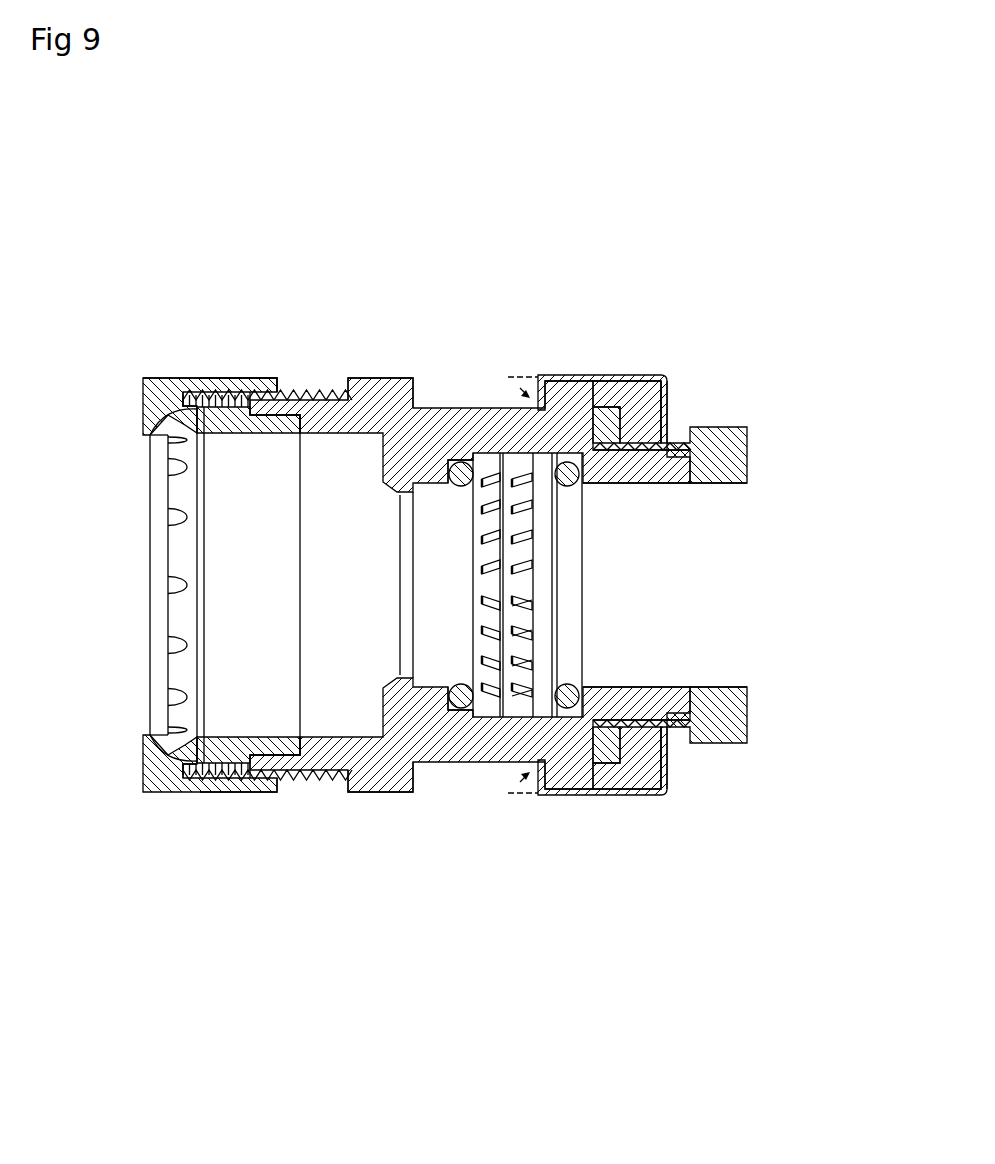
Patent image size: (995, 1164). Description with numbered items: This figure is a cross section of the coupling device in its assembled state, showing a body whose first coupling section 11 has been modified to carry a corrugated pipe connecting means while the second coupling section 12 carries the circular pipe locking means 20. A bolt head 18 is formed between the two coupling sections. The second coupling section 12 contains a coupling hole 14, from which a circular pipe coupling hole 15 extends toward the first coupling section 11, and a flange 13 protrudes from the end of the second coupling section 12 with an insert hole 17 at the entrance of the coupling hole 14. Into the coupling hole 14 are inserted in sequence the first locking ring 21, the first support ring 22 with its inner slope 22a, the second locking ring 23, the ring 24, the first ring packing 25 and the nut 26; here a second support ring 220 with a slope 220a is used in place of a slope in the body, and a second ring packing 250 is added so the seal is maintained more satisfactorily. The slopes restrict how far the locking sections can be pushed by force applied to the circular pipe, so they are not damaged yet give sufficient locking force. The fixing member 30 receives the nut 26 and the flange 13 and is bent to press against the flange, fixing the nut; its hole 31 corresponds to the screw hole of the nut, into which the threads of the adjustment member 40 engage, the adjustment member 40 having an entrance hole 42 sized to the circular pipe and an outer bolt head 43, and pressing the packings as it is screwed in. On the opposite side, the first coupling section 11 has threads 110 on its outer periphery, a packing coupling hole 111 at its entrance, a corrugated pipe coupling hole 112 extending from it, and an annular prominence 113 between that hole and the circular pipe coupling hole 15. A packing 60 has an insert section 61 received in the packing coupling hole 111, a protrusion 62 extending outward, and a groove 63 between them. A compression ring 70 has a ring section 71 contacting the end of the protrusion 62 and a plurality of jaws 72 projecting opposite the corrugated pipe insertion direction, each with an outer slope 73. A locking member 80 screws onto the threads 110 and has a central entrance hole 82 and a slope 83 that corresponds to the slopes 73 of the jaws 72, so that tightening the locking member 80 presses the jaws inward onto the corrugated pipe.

The first coupling section 11 is at (283, 693).
The threads 110 is at (308, 793).
The packing coupling hole 111 is at (225, 793).
The corrugated pipe coupling hole 112 is at (268, 793).
The annular prominence 113 is at (318, 715).
The second coupling section 12 is at (546, 571).
The flange 13 is at (630, 539).
The coupling hole 14 is at (600, 680).
The circular pipe coupling hole 15 is at (427, 500).
The insert hole 17 is at (667, 395).
The bolt head 18 is at (372, 378).
The circular pipe locking means 20 is at (575, 722).
The first locking ring 21 is at (492, 715).
The first support ring 22 is at (548, 690).
The second support ring 220 is at (480, 715).
The slope 220a is at (533, 633).
The slope 22a is at (533, 673).
The second locking ring 23 is at (540, 715).
The ring 24 is at (566, 710).
The first ring packing 25 is at (582, 715).
The nut 26 is at (654, 691).
The second ring packing 250 is at (458, 710).
The fixing member 30 is at (695, 533).
The hole 31 is at (672, 460).
The adjustment member 40 is at (771, 643).
The entrance hole 42 is at (713, 590).
The bolt head 43 is at (723, 727).
The packing 60 is at (269, 462).
The insert section 61 is at (297, 392).
The protrusion 62 is at (230, 388).
The groove 63 is at (255, 405).
The compression ring 70 is at (117, 585).
The ring section 71 is at (195, 392).
The jaws 72 is at (165, 416).
The slope 73 is at (168, 380).
The locking member 80 is at (158, 548).
The entrance hole 82 is at (153, 723).
The slope 83 is at (163, 440).